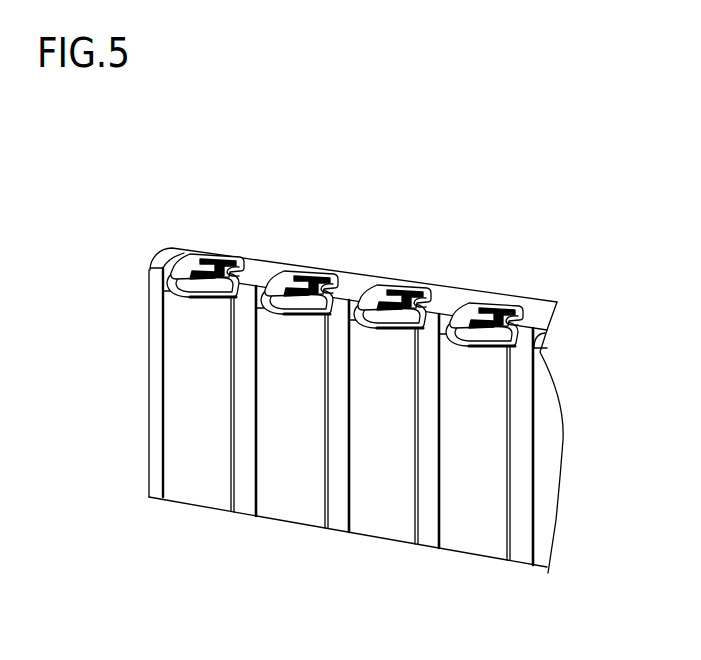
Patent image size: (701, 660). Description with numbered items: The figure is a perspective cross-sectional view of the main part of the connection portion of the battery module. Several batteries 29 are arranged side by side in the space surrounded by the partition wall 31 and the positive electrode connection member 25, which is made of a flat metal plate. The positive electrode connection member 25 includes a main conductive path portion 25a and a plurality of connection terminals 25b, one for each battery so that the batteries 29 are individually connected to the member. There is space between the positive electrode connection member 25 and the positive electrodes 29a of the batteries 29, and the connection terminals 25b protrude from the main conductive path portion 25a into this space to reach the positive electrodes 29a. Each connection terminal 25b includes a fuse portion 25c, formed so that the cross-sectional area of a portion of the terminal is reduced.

The positive electrode connection member 25 is at (345, 241).
The main conductive path portion 25a is at (239, 259).
The connection terminal 25b is at (213, 266).
The fuse portion 25c is at (244, 267).
The battery 29 is at (200, 435).
The positive electrode 29a is at (211, 282).
The partition wall 31 is at (248, 487).